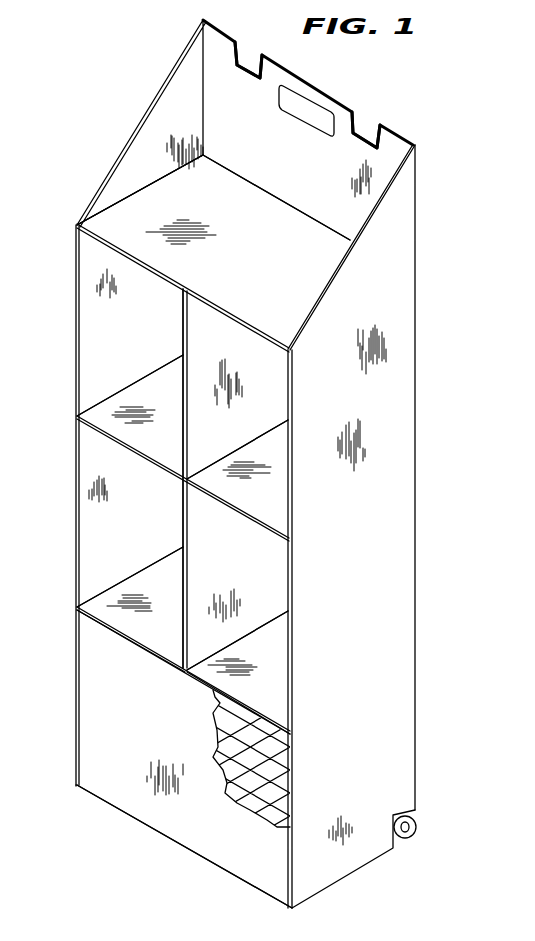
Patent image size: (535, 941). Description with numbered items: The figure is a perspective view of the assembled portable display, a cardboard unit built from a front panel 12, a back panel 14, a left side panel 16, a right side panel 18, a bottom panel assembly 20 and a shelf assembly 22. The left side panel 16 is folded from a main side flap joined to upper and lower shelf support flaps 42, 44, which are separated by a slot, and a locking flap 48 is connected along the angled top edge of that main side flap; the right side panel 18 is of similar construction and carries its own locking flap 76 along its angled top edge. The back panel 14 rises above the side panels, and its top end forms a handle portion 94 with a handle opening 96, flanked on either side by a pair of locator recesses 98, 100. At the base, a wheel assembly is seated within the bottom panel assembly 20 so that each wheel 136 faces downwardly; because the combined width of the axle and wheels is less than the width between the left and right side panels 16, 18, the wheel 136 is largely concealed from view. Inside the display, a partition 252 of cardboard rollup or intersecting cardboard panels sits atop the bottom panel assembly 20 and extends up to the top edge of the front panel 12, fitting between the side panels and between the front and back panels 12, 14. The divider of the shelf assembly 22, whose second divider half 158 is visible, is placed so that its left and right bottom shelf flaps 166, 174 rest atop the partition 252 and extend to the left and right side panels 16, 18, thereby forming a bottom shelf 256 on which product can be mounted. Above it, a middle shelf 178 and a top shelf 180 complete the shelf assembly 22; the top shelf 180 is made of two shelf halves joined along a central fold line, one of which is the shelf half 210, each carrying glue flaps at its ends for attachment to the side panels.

The front panel 12 is at (103, 703).
The back panel 14 is at (331, 196).
The left side panel 16 is at (66, 371).
The right side panel 18 is at (391, 604).
The bottom panel assembly 20 is at (165, 838).
The shelf assembly 22 is at (145, 549).
The upper shelf support flap 42 is at (138, 339).
The lower shelf support flap 44 is at (138, 533).
The locking flap 48 is at (160, 107).
The locking flap 76 is at (342, 257).
The handle portion 94 is at (308, 150).
The handle opening 96 is at (312, 112).
The locator recess 98 is at (255, 60).
The locator recess 100 is at (363, 125).
The wheel 136 is at (418, 828).
The divider half 158 is at (241, 559).
The left bottom shelf flap 166 is at (167, 628).
The right bottom shelf flap 174 is at (266, 692).
The middle shelf 178 is at (102, 438).
The top shelf 180 is at (106, 219).
The shelf half 210 is at (271, 285).
The partition 252 is at (302, 769).
The bottom shelf 256 is at (117, 632).